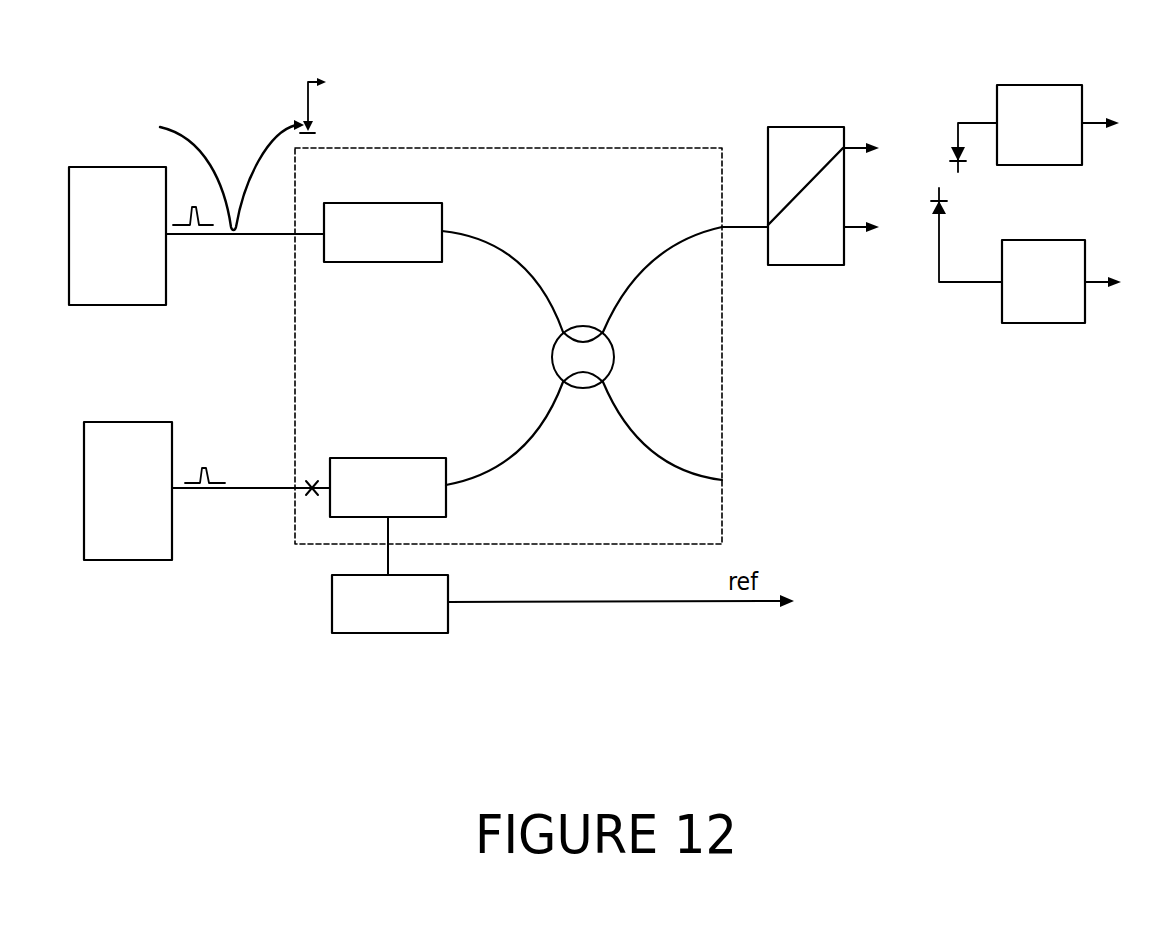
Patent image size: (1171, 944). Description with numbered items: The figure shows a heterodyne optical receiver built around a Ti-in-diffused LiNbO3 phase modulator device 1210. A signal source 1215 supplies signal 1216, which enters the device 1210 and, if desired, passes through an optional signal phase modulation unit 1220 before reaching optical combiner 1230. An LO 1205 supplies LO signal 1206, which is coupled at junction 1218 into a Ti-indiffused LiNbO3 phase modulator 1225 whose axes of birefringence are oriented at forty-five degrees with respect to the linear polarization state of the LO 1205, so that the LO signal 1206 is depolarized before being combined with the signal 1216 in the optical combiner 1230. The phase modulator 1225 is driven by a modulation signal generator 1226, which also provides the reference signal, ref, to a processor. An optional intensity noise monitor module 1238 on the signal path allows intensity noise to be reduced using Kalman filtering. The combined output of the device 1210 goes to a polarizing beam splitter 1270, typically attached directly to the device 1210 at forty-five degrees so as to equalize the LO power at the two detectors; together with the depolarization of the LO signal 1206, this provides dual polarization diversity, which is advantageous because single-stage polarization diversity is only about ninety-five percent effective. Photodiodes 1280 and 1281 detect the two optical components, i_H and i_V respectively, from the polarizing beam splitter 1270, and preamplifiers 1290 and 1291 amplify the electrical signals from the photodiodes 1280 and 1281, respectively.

The LO 1205 is at (152, 423).
The LO signal 1206 is at (204, 481).
The Ti-in-diffused LiNbO3 phase modulator device 1210 is at (613, 148).
The signal source 1215 is at (82, 167).
The signal 1216 is at (192, 206).
The junction 1218 is at (311, 496).
The optional signal phase modulation unit 1220 is at (340, 262).
The Ti-indiffused LiNbO3 phase modulator 1225 is at (430, 458).
The modulation signal generator 1226 is at (352, 635).
The optical combiner 1230 is at (585, 330).
The intensity noise monitor module 1238 is at (199, 130).
The polarizing beam splitter 1270 is at (778, 127).
The photodiode 1280 is at (964, 122).
The photodiode 1281 is at (952, 283).
The preamplifier 1290 is at (1065, 85).
The preamplifier 1291 is at (1062, 323).